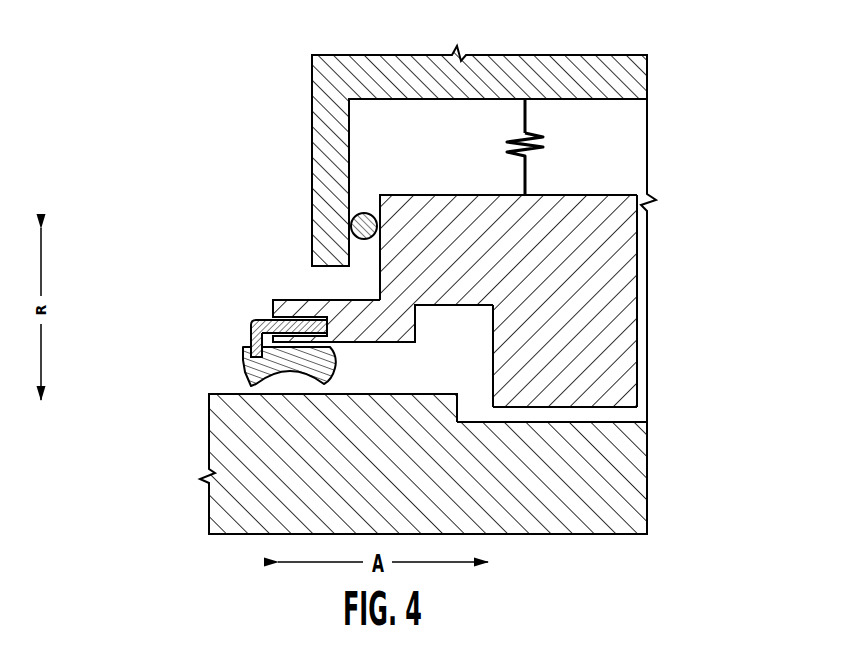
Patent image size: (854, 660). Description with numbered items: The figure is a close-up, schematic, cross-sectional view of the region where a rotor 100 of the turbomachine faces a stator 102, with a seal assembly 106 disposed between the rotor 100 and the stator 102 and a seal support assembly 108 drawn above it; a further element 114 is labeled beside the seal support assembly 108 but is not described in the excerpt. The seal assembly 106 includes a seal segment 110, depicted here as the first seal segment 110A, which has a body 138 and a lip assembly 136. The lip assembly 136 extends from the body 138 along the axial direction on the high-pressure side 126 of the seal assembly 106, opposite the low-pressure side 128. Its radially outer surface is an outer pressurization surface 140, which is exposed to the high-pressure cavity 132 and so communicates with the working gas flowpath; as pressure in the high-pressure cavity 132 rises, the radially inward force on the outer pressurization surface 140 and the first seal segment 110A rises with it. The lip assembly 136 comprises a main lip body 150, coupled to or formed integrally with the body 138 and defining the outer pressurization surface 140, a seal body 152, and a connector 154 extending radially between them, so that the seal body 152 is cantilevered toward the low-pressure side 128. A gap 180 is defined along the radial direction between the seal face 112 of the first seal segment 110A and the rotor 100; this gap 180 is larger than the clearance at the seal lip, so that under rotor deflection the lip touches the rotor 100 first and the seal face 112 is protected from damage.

The rotor 100 is at (223, 420).
The stator 102 is at (540, 72).
The seal assembly 106 is at (598, 190).
The seal support assembly 108 is at (552, 130).
The seal segment 110 is at (594, 272).
The first seal segment 110A is at (707, 322).
The seal face 112 is at (557, 410).
The spring rod 114 is at (528, 117).
The high-pressure side 126 is at (268, 184).
The low-pressure side 128 is at (727, 317).
The high-pressure cavity 132 is at (160, 214).
The lip assembly 136 is at (214, 284).
The body 138 is at (593, 232).
The outer pressurization surface 140 is at (304, 296).
The main lip body 150 is at (285, 304).
The seal body 152 is at (325, 360).
The connector 154 is at (257, 322).
The gap 180 is at (600, 415).